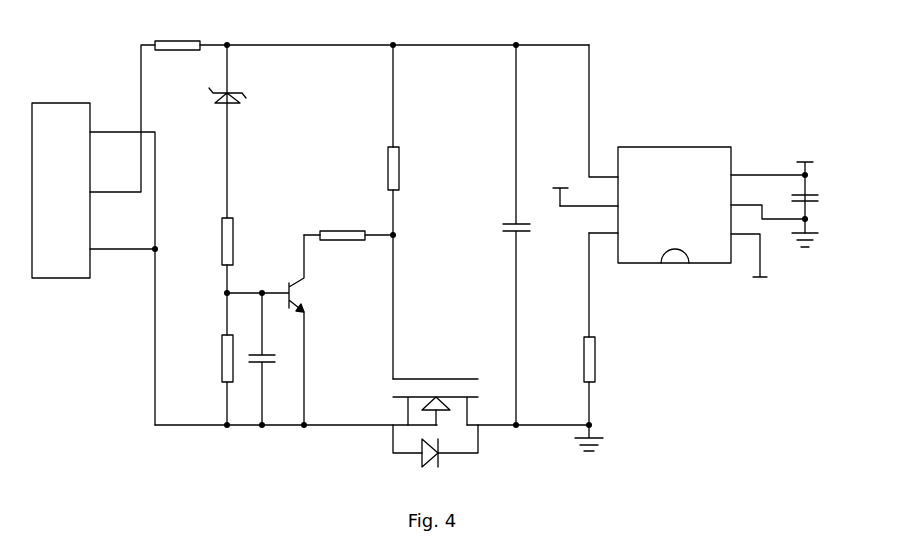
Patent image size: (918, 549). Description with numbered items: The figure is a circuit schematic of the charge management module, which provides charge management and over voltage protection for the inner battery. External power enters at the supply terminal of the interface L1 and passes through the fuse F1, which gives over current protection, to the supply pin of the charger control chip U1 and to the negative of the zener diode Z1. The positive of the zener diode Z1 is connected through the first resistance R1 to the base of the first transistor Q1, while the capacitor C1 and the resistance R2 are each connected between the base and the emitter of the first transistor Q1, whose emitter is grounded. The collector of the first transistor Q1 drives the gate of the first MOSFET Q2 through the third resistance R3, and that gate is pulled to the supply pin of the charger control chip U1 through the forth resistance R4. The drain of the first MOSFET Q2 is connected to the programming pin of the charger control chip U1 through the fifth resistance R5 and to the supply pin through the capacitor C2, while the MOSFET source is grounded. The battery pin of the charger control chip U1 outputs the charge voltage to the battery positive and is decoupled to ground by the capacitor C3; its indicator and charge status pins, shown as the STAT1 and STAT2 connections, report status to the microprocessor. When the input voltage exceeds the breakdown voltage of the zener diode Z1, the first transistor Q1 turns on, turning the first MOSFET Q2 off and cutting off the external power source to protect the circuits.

The interface L1 is at (69, 181).
The fuse F1 is at (177, 33).
The zener diode Z1 is at (215, 131).
The first resistance R1 is at (212, 255).
The resistance R2 is at (212, 359).
The third resistance R3 is at (348, 223).
The forth resistance R4 is at (405, 212).
The fifth resistance R5 is at (597, 342).
The capacitor C1 is at (272, 359).
The capacitor C2 is at (502, 235).
The capacitor C3 is at (785, 219).
The first transistor Q1 is at (265, 330).
The first MOSFET Q2 is at (418, 423).
The charger control chip U1 is at (653, 154).
The status terminal 1 STAT1 is at (555, 186).
The status terminal 2 STAT2 is at (759, 268).